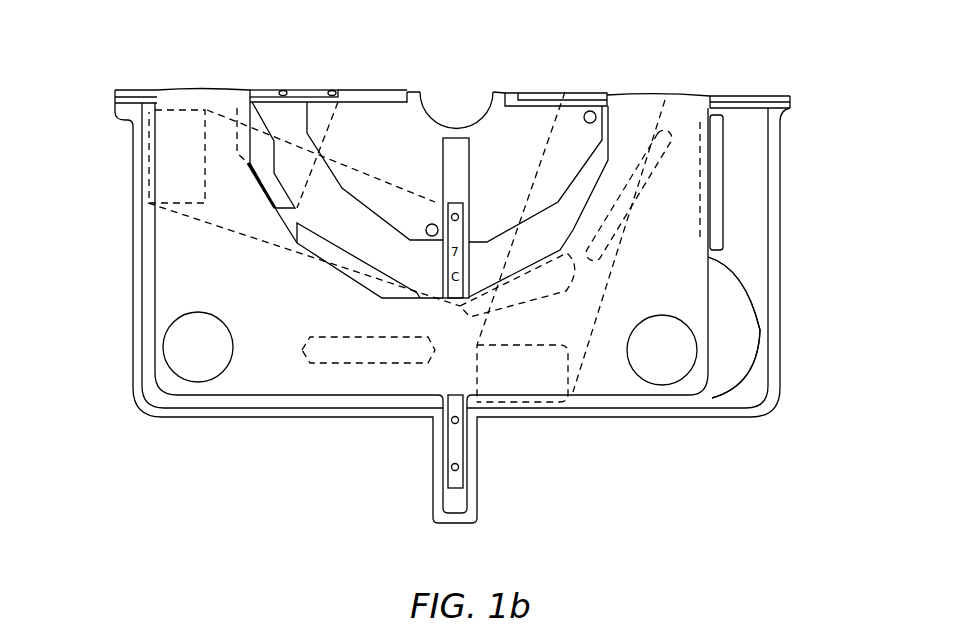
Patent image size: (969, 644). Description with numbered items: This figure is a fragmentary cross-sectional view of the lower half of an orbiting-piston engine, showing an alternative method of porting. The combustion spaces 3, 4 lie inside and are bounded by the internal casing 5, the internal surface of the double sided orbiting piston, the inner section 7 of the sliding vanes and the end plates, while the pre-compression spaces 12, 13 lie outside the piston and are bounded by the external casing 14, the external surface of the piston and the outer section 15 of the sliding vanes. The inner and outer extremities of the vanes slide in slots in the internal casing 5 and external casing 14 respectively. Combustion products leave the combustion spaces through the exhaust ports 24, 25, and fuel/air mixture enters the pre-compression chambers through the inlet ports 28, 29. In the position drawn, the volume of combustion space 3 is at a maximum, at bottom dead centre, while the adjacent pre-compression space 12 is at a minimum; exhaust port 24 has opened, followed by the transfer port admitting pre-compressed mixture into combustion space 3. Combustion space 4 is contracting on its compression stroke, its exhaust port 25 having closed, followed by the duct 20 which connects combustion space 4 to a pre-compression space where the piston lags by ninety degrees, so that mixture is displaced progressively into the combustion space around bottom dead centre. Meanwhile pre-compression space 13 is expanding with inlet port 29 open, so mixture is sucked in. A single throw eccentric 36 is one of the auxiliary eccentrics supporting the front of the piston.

The combustion space 3 is at (327, 211).
The combustion space 4 is at (555, 233).
The internal casing 5 is at (433, 237).
The inner section of the sliding vanes 7 is at (303, 93).
The pre-compression space 12 is at (293, 401).
The pre-compression space 13 is at (760, 263).
The external casing 14 is at (590, 413).
The outer section of the sliding vanes 15 is at (126, 92).
The duct 20 is at (424, 247).
The exhaust port 24 is at (331, 262).
The exhaust port 25 is at (645, 176).
The inlet port 28 is at (368, 350).
The inlet port 29 is at (725, 167).
The single throw eccentric 36 is at (750, 347).